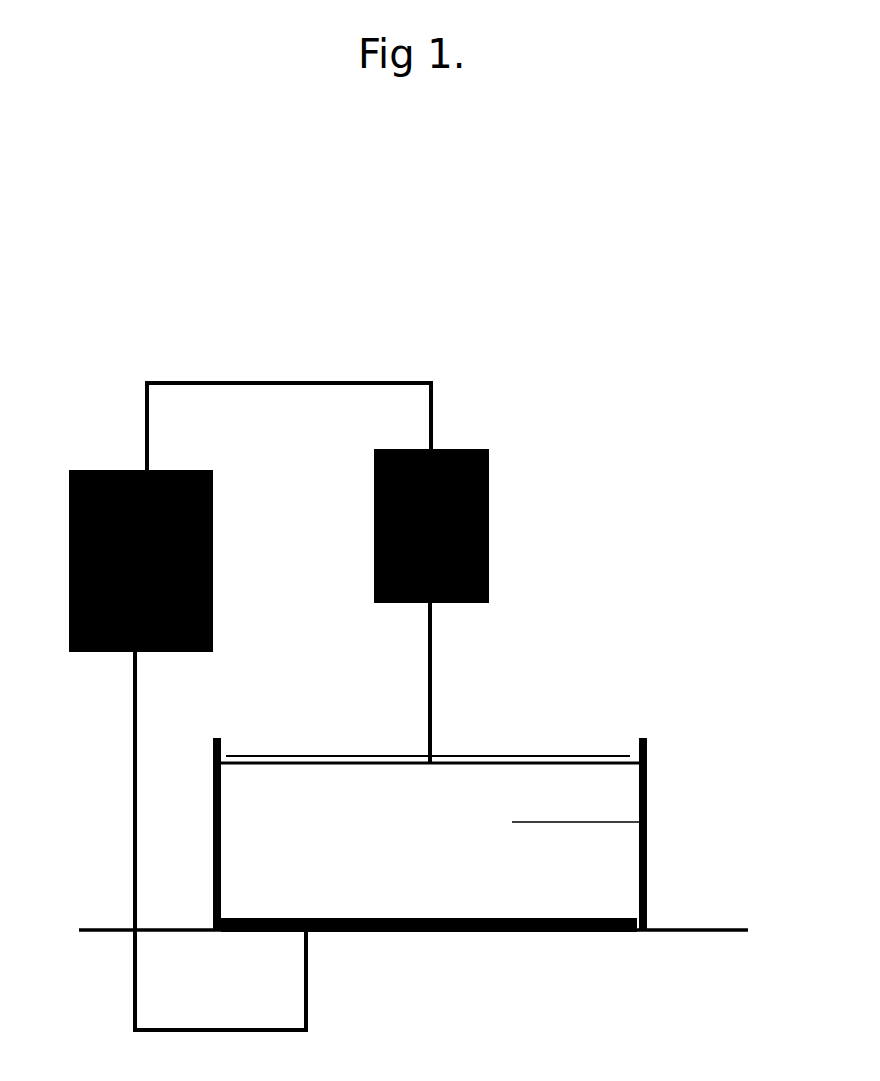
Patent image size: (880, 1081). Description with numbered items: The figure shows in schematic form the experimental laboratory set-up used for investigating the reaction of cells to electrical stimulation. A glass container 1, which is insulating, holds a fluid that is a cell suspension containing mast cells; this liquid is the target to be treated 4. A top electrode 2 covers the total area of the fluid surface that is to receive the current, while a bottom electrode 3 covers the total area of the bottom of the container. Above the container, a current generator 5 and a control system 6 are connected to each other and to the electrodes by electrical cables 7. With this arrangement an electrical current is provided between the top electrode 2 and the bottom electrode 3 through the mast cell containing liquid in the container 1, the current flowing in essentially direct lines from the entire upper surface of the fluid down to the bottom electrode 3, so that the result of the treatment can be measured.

The glass container 1 is at (654, 784).
The top electrode 2 is at (518, 757).
The bottom electrode 3 is at (487, 932).
The target to be treated 4 is at (647, 822).
The current generator 5 is at (469, 442).
The control system 6 is at (96, 465).
The electrical cables 7 is at (323, 378).